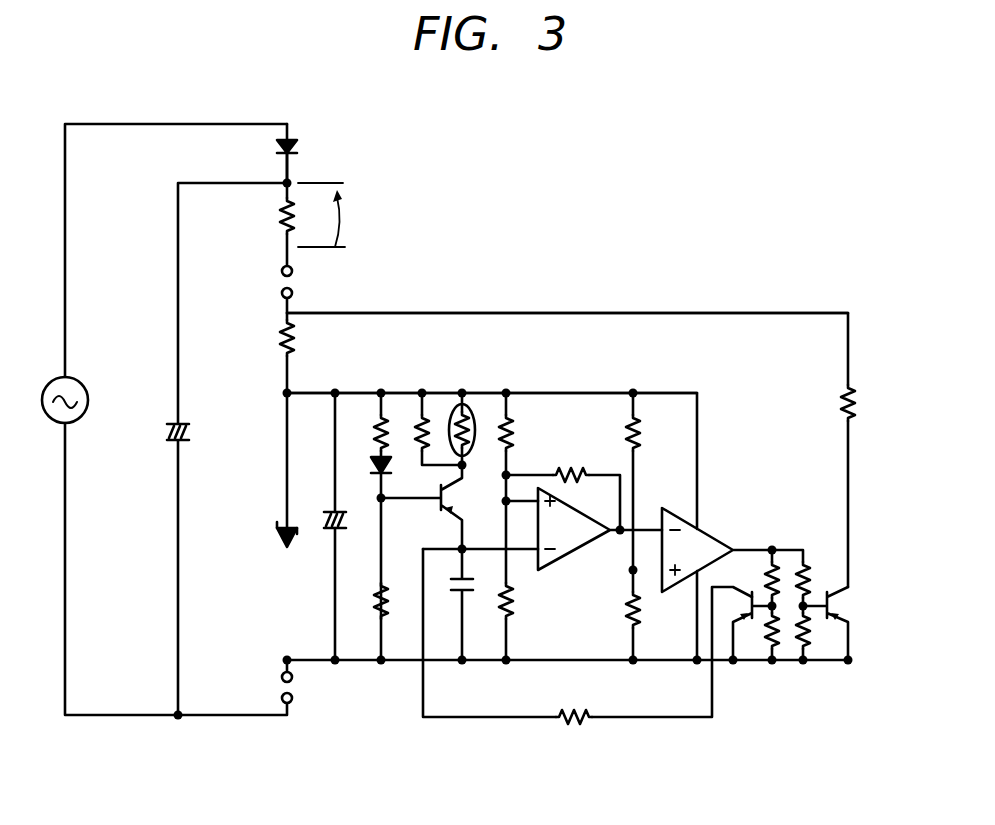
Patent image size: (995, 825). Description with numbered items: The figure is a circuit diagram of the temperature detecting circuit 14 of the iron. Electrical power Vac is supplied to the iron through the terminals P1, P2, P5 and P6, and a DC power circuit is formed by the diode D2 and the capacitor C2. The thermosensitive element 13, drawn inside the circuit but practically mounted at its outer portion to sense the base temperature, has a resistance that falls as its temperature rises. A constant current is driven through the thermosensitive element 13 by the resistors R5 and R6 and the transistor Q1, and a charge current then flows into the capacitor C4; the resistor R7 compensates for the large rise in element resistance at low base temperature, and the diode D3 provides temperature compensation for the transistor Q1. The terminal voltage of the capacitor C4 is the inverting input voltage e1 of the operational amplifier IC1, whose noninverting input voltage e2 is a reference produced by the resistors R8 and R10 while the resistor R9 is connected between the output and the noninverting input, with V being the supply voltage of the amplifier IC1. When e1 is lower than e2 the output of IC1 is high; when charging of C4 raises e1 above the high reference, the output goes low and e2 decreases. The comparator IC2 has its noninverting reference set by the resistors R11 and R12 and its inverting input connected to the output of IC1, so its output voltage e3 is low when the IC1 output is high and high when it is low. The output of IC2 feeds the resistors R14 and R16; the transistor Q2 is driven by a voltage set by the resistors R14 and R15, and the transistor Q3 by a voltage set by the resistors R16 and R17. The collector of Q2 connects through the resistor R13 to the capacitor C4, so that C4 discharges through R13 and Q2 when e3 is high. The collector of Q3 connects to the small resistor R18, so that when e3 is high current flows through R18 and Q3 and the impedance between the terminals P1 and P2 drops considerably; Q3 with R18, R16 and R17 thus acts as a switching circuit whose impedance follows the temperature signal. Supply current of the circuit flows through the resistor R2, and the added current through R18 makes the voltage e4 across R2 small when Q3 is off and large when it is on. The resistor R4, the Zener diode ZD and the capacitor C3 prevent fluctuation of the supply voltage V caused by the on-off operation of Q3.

The electrical power Vac is at (86, 386).
The diode D2 is at (300, 149).
The resistor R2 is at (280, 214).
The voltage across the resistor R2 e4 is at (338, 215).
The terminal P5 is at (281, 271).
The terminal P1 is at (281, 294).
The resistor R4 is at (297, 346).
The capacitor C2 is at (191, 433).
The capacitor C3 is at (327, 512).
The Zener diode ZD is at (274, 542).
The terminal P2 is at (281, 678).
The terminal P6 is at (281, 698).
The resistor R5 is at (371, 428).
The diode D3 is at (392, 470).
The resistor R7 is at (414, 424).
The thermosensitive element 13 is at (453, 410).
The transistor Q1 is at (439, 507).
The inverting input terminal voltage e1 is at (459, 547).
The noninverting input terminal voltage e2 is at (504, 501).
The resistor R6 is at (373, 603).
The capacitor C4 is at (470, 597).
The resistor R8 is at (517, 441).
The resistor R9 is at (579, 468).
The resistor R10 is at (518, 607).
The operational amplifier IC1 is at (574, 565).
The resistor R11 is at (645, 440).
The resistor R12 is at (640, 625).
The supply voltage V is at (564, 391).
The temperature detecting circuit 14 is at (686, 311).
The resistor R18 is at (842, 400).
The comparator IC2 is at (712, 521).
The output voltage of the comparator IC2 e3 is at (771, 546).
The resistor R14 is at (760, 577).
The resistor R15 is at (768, 649).
The resistor R16 is at (812, 558).
The resistor R17 is at (816, 649).
The resistor R13 is at (573, 727).
The transistor Q2 is at (738, 600).
The transistor Q3 is at (831, 606).